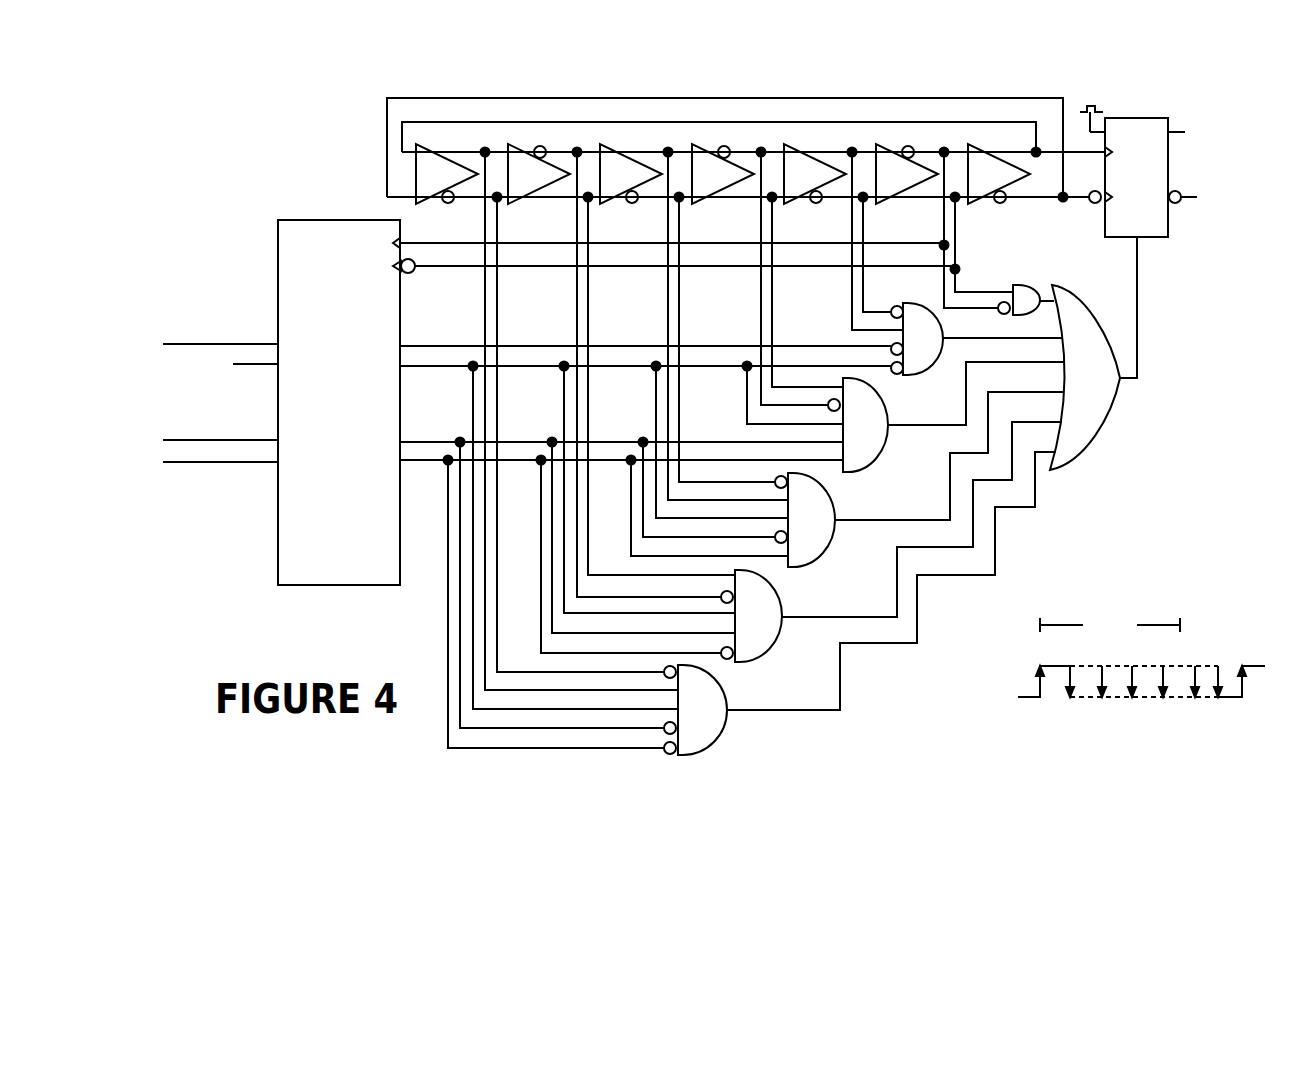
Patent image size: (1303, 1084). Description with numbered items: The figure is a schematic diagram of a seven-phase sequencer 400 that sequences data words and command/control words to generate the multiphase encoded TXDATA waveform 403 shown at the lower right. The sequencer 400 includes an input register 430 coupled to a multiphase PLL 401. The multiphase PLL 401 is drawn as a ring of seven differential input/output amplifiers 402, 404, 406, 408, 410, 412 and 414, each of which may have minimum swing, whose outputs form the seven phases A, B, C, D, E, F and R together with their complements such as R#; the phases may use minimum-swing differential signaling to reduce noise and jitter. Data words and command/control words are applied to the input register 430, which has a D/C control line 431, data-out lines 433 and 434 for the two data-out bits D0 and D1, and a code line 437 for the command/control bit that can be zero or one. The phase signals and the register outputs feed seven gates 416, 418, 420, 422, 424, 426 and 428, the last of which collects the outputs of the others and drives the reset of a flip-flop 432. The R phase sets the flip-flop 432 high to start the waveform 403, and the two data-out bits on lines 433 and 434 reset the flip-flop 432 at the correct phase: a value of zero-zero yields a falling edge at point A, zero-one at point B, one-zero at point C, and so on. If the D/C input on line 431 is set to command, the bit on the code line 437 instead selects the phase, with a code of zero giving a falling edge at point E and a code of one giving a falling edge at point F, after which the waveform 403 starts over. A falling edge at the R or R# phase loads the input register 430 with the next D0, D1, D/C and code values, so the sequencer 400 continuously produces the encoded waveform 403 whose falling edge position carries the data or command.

The seven-phase sequencer 400 is at (341, 160).
The multiphase PLL 401 is at (741, 89).
The differential input/output amplifier 402 is at (421, 204).
The multiphase encoded TXDATA waveform 403 is at (1155, 750).
The differential input/output amplifier 404 is at (513, 204).
The differential input/output amplifier 406 is at (605, 204).
The differential input/output amplifier 408 is at (697, 204).
The differential input/output amplifier 410 is at (789, 204).
The differential input/output amplifier 412 is at (881, 204).
The differential input/output amplifier 414 is at (973, 204).
The gate 416 is at (718, 750).
The gate 418 is at (773, 655).
The gate 420 is at (828, 560).
The gate 422 is at (886, 466).
The gate 424 is at (930, 376).
The gate 426 is at (1030, 286).
The gate 428 is at (1098, 448).
The input register 430 is at (278, 547).
The D/C control line 431 is at (232, 366).
The flip-flop 432 is at (1150, 117).
The data-out line 433 is at (163, 440).
The data-out line 434 is at (163, 462).
The code line 437 is at (163, 344).